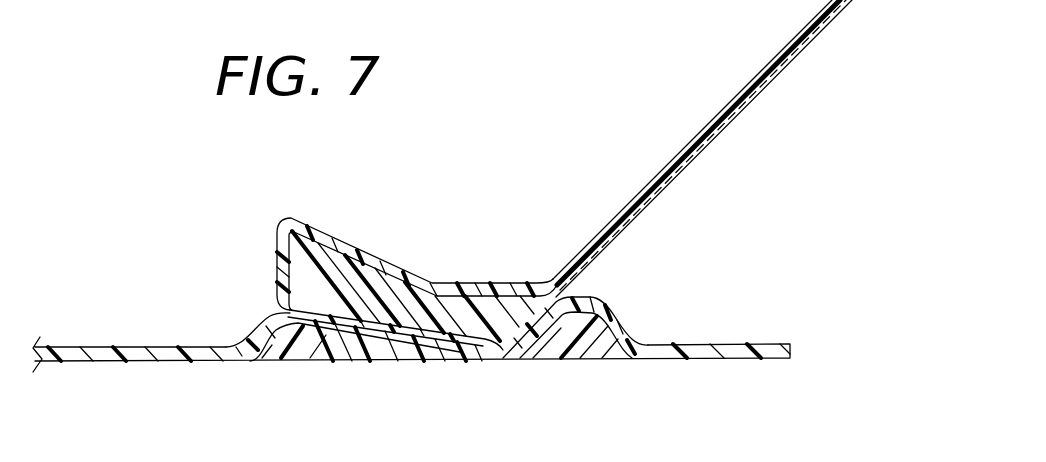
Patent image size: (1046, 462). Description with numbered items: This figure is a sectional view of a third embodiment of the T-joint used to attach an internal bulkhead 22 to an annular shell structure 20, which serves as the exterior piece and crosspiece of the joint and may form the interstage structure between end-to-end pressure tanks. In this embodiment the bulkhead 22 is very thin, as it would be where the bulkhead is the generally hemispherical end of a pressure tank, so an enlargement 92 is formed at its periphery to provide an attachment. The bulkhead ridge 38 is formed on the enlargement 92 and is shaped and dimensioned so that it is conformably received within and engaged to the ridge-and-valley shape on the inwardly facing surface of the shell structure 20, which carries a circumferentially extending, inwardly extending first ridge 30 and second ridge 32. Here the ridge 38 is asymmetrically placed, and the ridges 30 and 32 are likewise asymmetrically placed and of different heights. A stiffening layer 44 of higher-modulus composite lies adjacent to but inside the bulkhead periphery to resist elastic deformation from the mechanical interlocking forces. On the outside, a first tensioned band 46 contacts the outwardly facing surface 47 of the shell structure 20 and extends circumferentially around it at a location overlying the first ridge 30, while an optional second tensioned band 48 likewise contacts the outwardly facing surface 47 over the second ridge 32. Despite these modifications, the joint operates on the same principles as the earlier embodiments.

The shell structure 20 is at (108, 363).
The bulkhead 22 is at (727, 119).
The first ridge 30 is at (290, 308).
The second ridge 32 is at (578, 288).
The bulkhead ridge 38 is at (481, 349).
The stiffening layer 44 is at (318, 249).
The first tensioned band 46 is at (303, 348).
The outwardly facing surface 47 is at (221, 364).
The second tensioned band 48 is at (570, 336).
The enlargement 92 is at (385, 265).